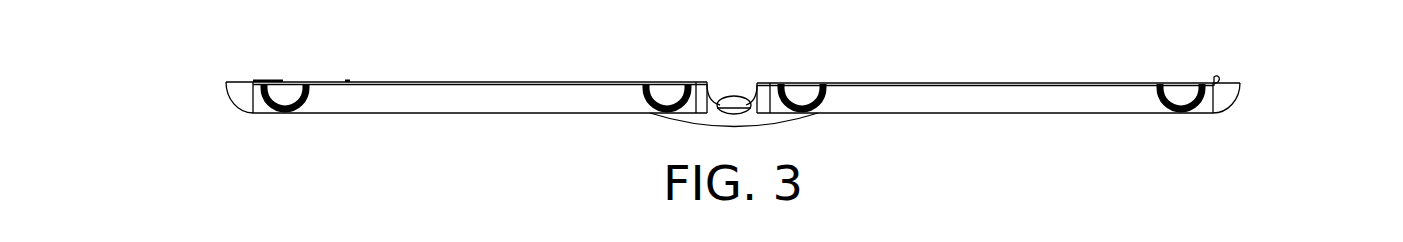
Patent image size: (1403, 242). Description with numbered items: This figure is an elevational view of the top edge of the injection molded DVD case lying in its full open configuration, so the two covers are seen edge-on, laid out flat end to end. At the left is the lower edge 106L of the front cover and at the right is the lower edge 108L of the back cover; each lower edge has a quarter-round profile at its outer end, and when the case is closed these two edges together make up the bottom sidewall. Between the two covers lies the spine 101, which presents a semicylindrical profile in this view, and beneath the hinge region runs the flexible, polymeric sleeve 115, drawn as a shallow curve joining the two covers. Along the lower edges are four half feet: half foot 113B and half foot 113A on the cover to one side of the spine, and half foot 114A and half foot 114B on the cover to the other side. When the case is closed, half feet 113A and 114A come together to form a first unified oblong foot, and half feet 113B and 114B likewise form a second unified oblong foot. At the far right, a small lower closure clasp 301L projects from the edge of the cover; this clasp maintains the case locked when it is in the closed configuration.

The spine 101 is at (736, 104).
The lower edge of the front cover 106L is at (481, 98).
The lower edge of the back cover 108L is at (988, 98).
The half foot 113A is at (644, 114).
The half foot 113B is at (266, 114).
The half foot 114A is at (822, 114).
The half foot 114B is at (1206, 114).
The flexible polymeric sleeve 115 is at (787, 126).
The lower closure clasp 301L is at (1223, 75).